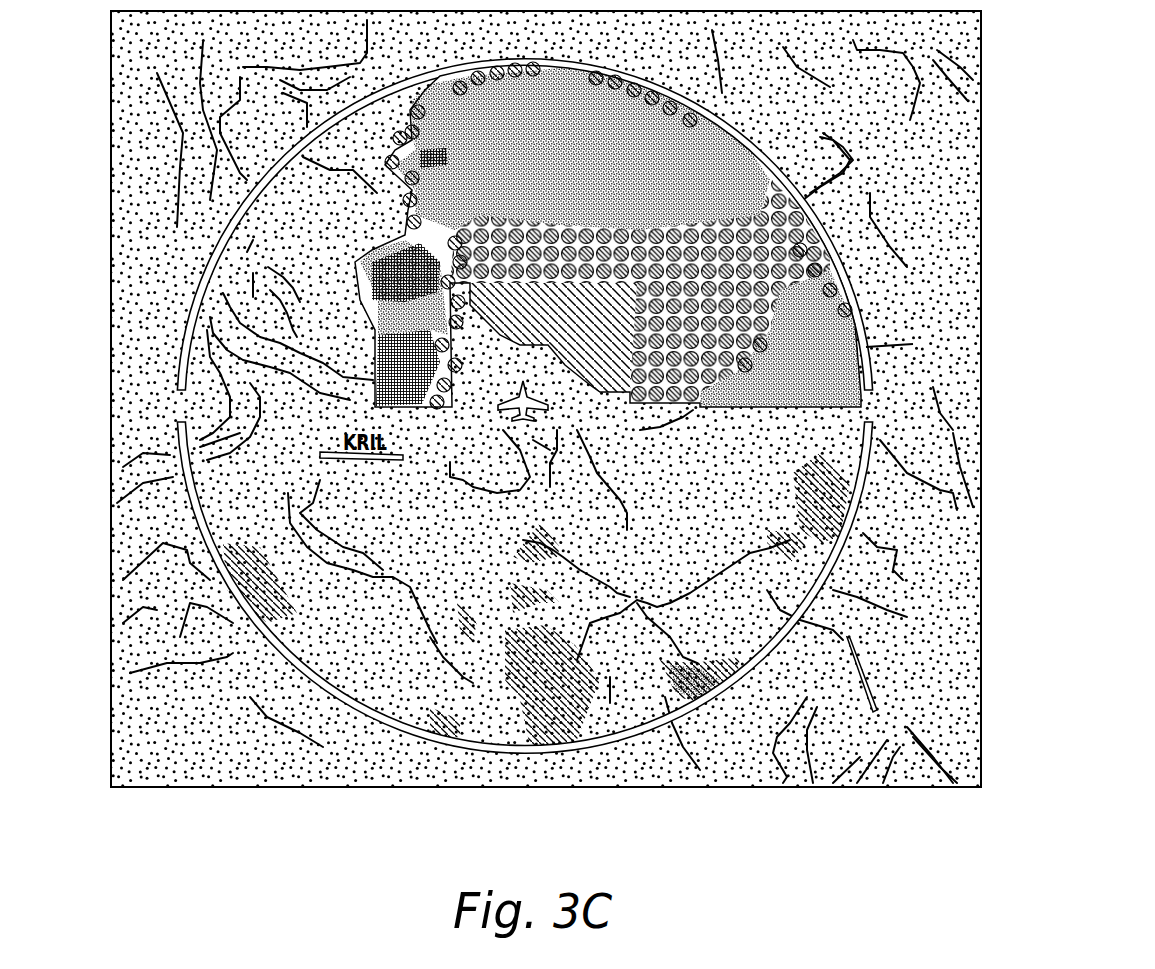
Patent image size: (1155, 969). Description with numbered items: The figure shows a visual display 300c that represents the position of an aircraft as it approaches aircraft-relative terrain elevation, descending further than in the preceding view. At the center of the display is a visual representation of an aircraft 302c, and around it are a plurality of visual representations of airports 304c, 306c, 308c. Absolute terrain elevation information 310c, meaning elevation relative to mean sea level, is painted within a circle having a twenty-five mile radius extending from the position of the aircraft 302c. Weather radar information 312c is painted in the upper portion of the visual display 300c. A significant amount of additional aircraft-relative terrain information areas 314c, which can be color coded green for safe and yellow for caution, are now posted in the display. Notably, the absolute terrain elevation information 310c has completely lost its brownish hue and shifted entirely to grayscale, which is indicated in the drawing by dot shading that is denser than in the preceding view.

The visual display 300c is at (1050, 100).
The visual representation of an aircraft 302c is at (495, 425).
The visual representation of an airport 304c is at (525, 406).
The visual representation of an airport 306c is at (897, 333).
The visual representation of an airport 308c is at (910, 680).
The absolute terrain elevation information 310c is at (268, 492).
The weather radar information 312c is at (667, 192).
The aircraft-relative terrain information areas 314c is at (640, 610).